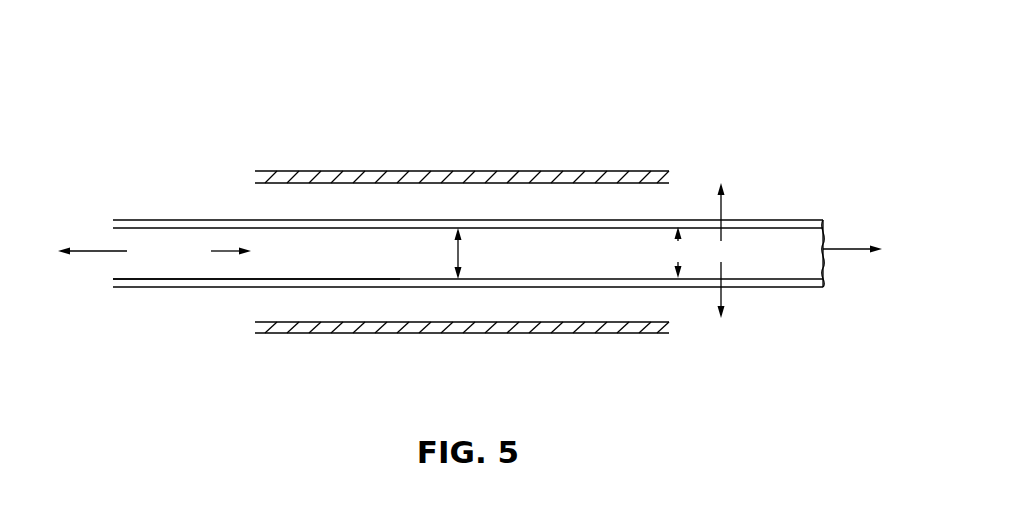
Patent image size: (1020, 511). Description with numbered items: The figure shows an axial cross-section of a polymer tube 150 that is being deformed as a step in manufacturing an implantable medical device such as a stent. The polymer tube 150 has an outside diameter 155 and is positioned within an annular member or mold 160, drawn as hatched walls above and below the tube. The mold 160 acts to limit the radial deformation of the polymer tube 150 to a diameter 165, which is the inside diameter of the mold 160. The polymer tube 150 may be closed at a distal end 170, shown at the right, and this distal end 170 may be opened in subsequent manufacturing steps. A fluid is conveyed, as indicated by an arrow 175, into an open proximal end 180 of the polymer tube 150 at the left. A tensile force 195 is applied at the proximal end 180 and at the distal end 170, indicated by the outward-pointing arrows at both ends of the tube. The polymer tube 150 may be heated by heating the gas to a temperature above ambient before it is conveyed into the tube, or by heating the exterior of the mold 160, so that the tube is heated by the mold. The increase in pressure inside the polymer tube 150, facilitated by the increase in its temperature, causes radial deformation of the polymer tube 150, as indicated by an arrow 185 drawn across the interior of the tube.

The polymer tube 150 is at (342, 219).
The outside diameter 155 is at (684, 252).
The annular member or mold 160 is at (636, 173).
The inside diameter of mold 165 is at (727, 250).
The distal end 170 is at (841, 267).
The arrow indicating fluid conveyance 175 is at (221, 251).
The open proximal end 180 is at (118, 267).
The arrow indicating radial deformation 185 is at (463, 253).
The tensile force 195 is at (105, 251).